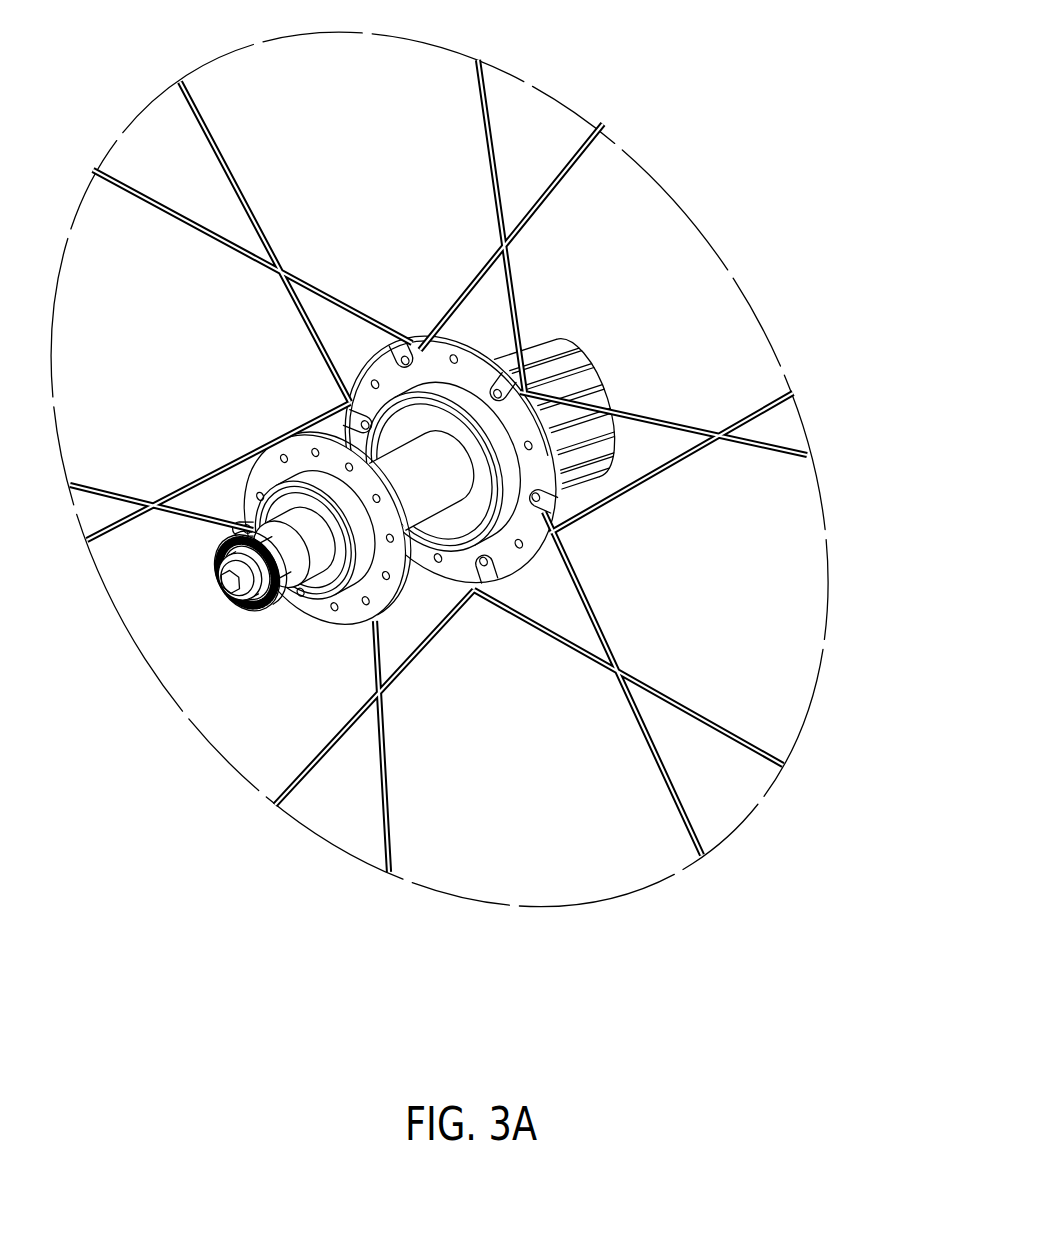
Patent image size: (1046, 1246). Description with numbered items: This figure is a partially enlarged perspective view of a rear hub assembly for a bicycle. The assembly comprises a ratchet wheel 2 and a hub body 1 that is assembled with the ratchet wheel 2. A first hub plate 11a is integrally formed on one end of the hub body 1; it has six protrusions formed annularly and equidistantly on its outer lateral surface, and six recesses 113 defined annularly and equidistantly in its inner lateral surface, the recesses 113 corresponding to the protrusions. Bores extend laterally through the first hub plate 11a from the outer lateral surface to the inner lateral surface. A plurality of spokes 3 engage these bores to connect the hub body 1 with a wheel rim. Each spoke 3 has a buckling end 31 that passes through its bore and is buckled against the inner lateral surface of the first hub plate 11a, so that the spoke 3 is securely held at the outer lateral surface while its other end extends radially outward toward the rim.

The hub body 1 is at (440, 504).
The first hub plate 11a is at (472, 353).
The recesses 113 is at (567, 341).
The ratchet wheel 2 is at (600, 405).
The spokes 3 is at (487, 93).
The buckling end 31 is at (545, 512).